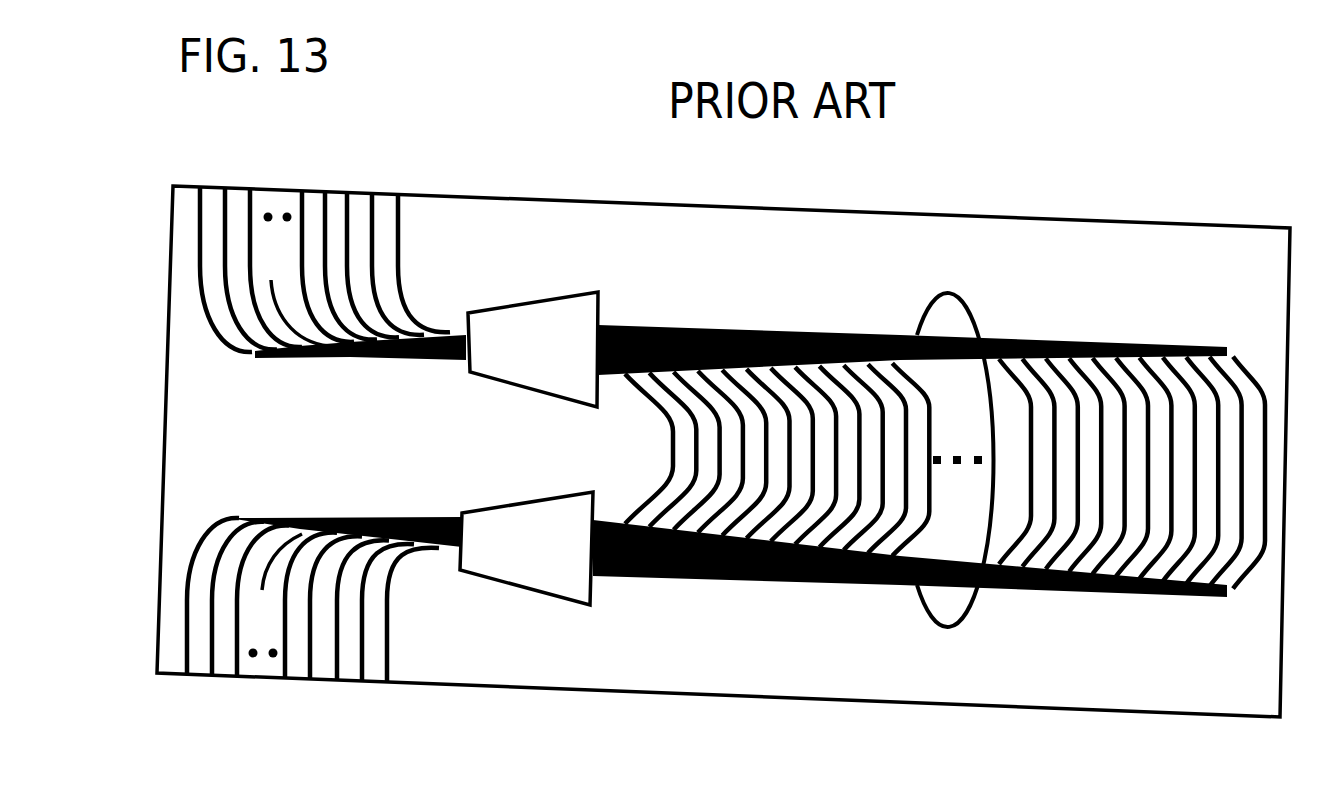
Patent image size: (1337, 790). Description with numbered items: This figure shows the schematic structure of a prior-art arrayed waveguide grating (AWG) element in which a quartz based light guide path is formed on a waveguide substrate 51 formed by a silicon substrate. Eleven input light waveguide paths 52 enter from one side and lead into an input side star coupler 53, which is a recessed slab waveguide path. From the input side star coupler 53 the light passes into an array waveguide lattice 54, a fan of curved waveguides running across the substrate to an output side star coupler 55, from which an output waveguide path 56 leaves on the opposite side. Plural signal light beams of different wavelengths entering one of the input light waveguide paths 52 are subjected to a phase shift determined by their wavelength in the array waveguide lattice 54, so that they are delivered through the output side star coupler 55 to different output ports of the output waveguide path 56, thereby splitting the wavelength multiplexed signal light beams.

The housing 51 is at (1075, 232).
The input light waveguide paths 52 is at (400, 183).
The input side star coupler 53 is at (581, 294).
The array waveguide lattice 54 is at (973, 612).
The output side star coupler 55 is at (590, 613).
The output waveguide path 56 is at (387, 690).